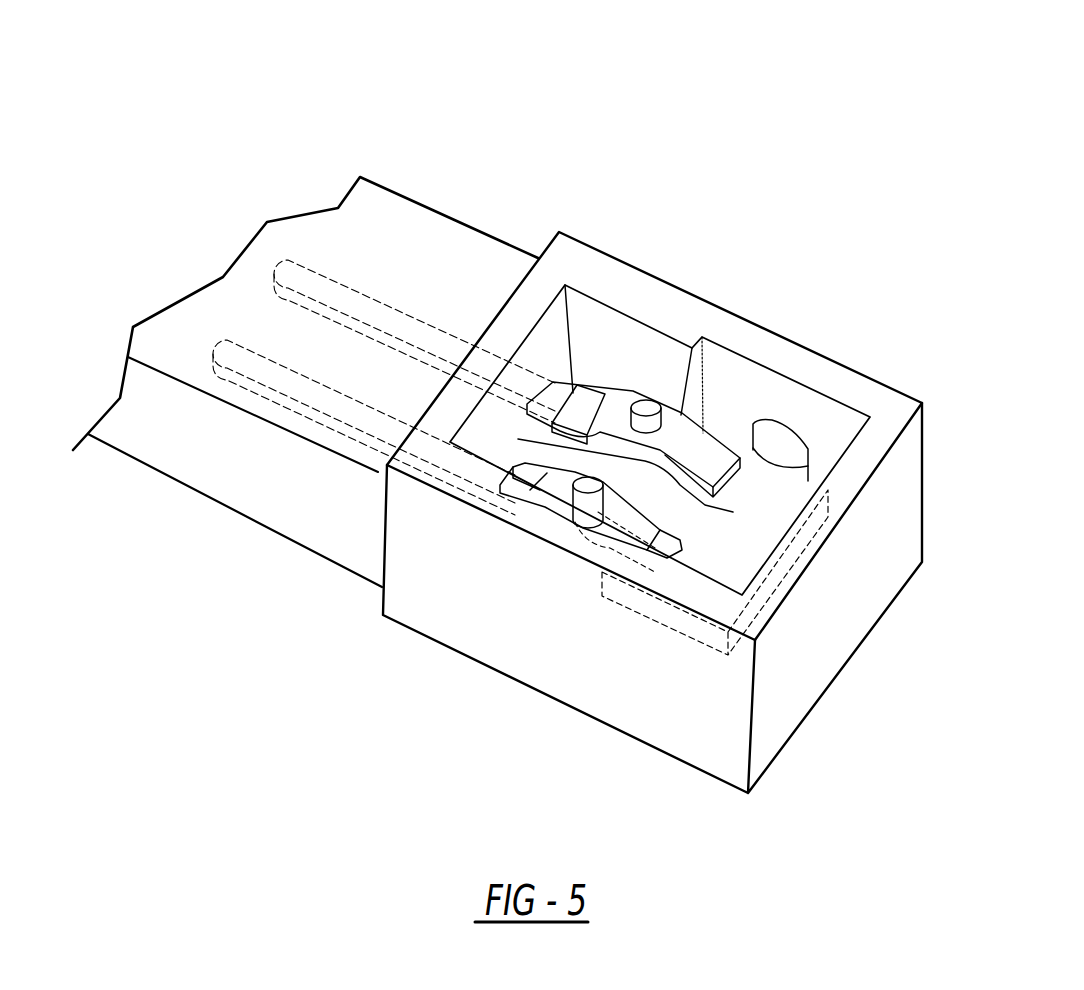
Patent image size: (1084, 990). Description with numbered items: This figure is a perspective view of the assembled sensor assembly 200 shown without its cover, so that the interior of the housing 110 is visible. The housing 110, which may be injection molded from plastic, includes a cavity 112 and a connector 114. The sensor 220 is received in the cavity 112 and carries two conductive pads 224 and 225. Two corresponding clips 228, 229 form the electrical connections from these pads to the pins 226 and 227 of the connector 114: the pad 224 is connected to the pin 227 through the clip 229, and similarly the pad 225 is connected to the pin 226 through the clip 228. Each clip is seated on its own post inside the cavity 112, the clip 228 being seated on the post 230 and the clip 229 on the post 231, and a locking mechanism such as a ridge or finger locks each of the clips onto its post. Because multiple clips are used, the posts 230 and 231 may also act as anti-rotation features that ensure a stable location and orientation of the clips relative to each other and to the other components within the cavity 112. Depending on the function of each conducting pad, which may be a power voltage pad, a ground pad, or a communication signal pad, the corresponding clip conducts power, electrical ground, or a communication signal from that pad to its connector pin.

The sensor assembly 200 is at (244, 158).
The connector 114 is at (380, 218).
The pin 226 is at (395, 318).
The pin 227 is at (322, 398).
The housing 110 is at (700, 317).
The sensor 220 is at (836, 418).
The cavity 112 is at (733, 480).
The conductive pad 225 is at (793, 497).
The clip 228 is at (617, 397).
The post 230 is at (646, 405).
The clip 229 is at (553, 480).
The post 231 is at (590, 492).
The conductive pad 224 is at (690, 537).